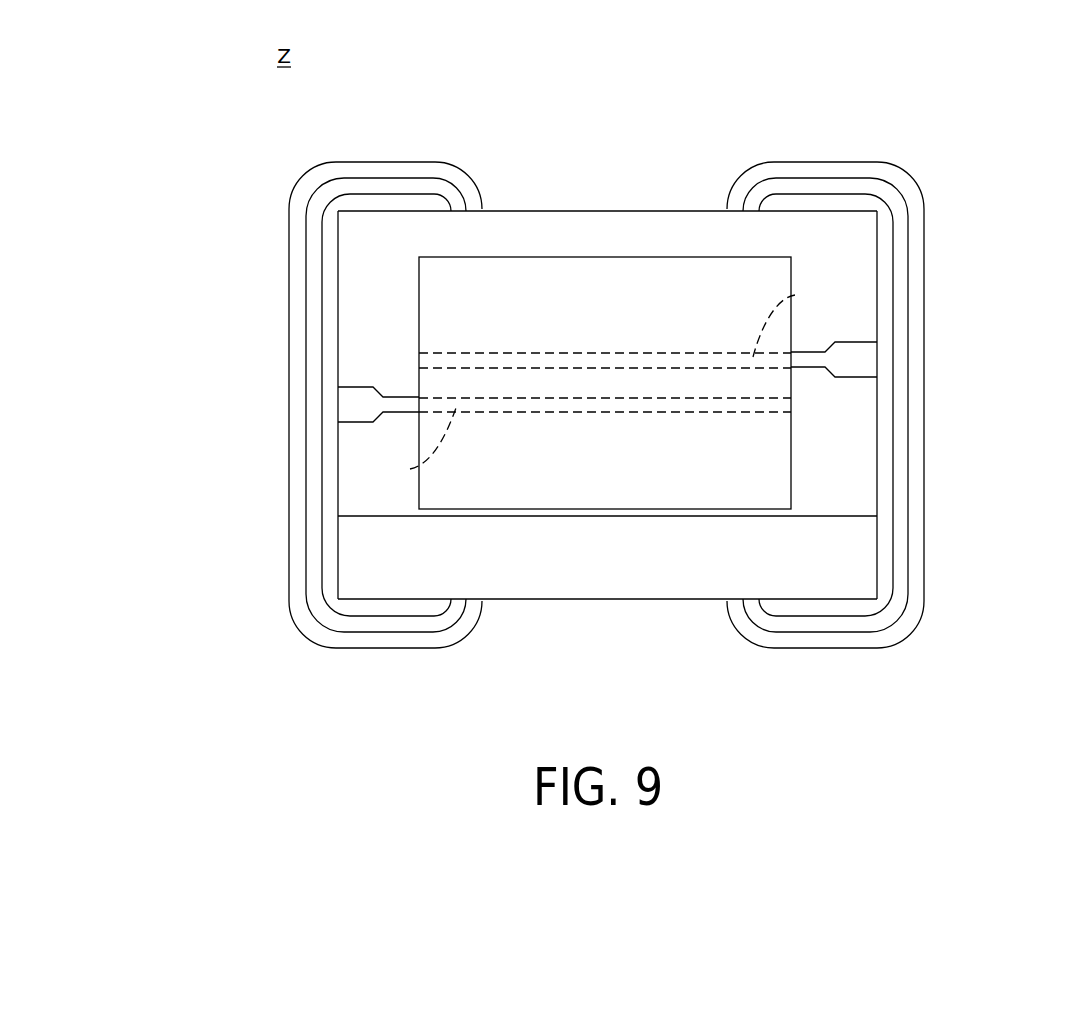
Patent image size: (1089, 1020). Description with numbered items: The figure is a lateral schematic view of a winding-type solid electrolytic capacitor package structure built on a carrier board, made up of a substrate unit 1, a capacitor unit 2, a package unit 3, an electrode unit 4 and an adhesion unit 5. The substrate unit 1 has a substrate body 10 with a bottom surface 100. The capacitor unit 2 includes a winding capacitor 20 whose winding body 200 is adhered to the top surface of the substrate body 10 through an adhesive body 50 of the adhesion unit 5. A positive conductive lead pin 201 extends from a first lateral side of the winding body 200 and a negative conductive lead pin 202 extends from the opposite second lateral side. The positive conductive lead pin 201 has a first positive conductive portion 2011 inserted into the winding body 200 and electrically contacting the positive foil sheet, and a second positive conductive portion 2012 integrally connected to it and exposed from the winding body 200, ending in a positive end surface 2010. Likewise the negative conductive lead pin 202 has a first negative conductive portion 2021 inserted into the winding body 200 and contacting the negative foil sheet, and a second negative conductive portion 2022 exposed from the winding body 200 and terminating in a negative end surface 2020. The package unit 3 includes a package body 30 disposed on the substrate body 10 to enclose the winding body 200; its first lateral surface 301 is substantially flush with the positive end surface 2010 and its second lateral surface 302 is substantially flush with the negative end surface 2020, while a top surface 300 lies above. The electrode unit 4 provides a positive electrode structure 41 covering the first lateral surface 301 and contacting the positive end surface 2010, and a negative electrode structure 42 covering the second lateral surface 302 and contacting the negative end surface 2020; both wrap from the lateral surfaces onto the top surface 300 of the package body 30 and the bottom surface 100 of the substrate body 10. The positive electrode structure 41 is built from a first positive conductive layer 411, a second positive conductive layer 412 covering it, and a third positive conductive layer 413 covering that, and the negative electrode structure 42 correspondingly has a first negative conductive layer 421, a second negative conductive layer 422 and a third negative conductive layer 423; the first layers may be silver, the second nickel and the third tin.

The substrate unit 1 is at (581, 677).
The substrate body 10 is at (590, 608).
The bottom surface of the substrate body 100 is at (530, 600).
The capacitor unit 2 is at (639, 173).
The winding capacitor 20 is at (650, 252).
The winding body 200 is at (575, 270).
The positive conductive lead pin 201 is at (221, 400).
The positive end surface 2010 is at (338, 398).
The first positive conductive portion 2011 is at (410, 469).
The second positive conductive portion 2012 is at (352, 415).
The negative conductive lead pin 202 is at (989, 292).
The negative end surface 2020 is at (878, 367).
The first negative conductive portion 2021 is at (795, 295).
The second negative conductive portion 2022 is at (857, 350).
The package unit 3 is at (694, 126).
The package body 30 is at (707, 206).
The top surface of the package body 300 is at (525, 210).
The first lateral surface 301 is at (338, 273).
The second lateral surface 302 is at (878, 241).
The electrode unit 4 is at (156, 530).
The positive electrode structure 41 is at (196, 487).
The first positive conductive layer 411 is at (330, 495).
The second positive conductive layer 412 is at (313, 550).
The third positive conductive layer 413 is at (295, 607).
The negative electrode structure 42 is at (1017, 470).
The first negative conductive layer 421 is at (883, 478).
The second negative conductive layer 422 is at (898, 530).
The third negative conductive layer 423 is at (913, 584).
The adhesion unit 5 is at (643, 640).
The adhesive body 50 is at (656, 522).